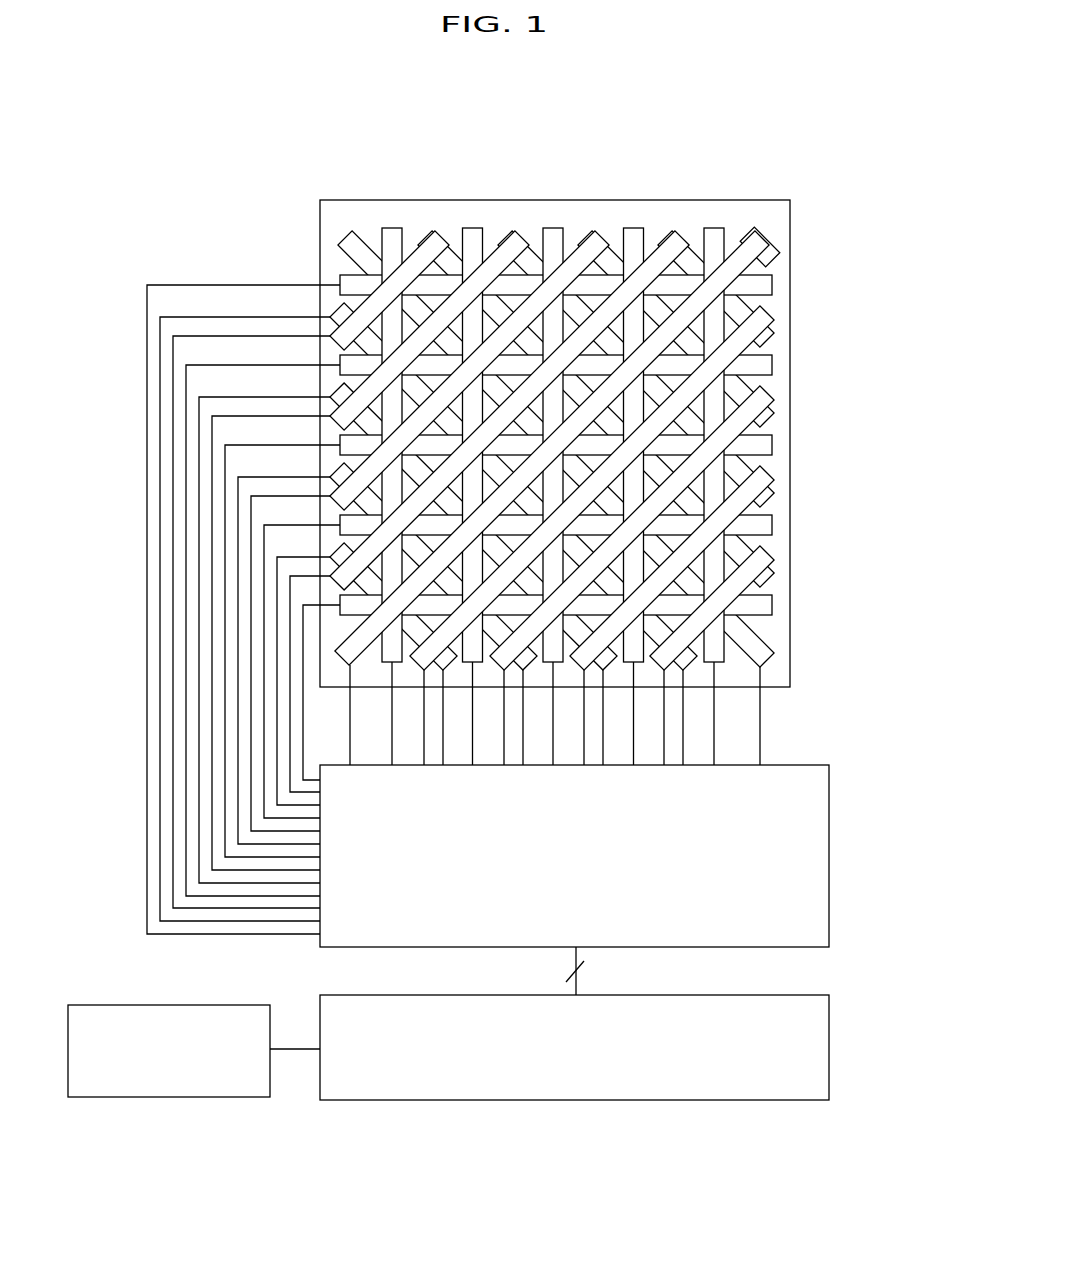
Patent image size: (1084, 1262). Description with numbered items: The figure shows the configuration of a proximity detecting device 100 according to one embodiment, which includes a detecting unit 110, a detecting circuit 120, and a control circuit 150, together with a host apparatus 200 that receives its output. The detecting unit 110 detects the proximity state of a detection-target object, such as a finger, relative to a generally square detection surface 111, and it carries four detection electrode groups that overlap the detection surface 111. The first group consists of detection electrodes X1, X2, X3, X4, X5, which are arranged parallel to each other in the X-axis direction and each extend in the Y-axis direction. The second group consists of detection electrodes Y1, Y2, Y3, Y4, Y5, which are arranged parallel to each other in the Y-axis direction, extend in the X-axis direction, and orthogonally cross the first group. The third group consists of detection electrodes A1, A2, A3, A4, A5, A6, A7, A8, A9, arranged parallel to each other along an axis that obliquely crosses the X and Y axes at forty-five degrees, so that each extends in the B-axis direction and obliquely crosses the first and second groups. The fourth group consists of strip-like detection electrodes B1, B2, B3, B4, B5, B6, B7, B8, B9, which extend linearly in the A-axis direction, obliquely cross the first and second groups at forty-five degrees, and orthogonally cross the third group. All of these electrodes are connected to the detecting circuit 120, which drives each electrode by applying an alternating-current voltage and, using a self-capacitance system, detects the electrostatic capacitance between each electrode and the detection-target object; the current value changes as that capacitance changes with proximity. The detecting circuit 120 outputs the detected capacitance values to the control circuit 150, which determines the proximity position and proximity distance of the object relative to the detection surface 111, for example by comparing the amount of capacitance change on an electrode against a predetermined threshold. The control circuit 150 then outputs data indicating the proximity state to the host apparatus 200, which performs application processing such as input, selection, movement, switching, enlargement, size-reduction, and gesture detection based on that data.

The proximity detecting device 100 is at (899, 89).
The detecting unit 110 is at (792, 195).
The detection surface 111 is at (318, 224).
The detecting circuit 120 is at (830, 855).
The control circuit 150 is at (830, 1048).
The host apparatus 200 is at (185, 1097).
The detection electrode X1 is at (394, 228).
The detection electrode X2 is at (474, 228).
The detection electrode X3 is at (555, 228).
The detection electrode X4 is at (635, 228).
The detection electrode X5 is at (715, 228).
The detection electrode Y1 is at (773, 285).
The detection electrode Y2 is at (773, 365).
The detection electrode Y3 is at (773, 445).
The detection electrode Y4 is at (773, 525).
The detection electrode Y5 is at (773, 605).
The detection electrode A1 is at (442, 228).
The detection electrode A2 is at (522, 228).
The detection electrode A3 is at (602, 228).
The detection electrode A4 is at (682, 228).
The detection electrode A5 is at (762, 228).
The detection electrode A6 is at (768, 306).
The detection electrode A7 is at (768, 386).
The detection electrode A8 is at (768, 466).
The detection electrode A9 is at (768, 546).
The detection electrode B1 is at (367, 583).
The detection electrode B2 is at (367, 503).
The detection electrode B3 is at (367, 423).
The detection electrode B4 is at (367, 343).
The detection electrode B5 is at (357, 253).
The detection electrode B6 is at (766, 507).
The detection electrode B7 is at (766, 427).
The detection electrode B8 is at (766, 347).
The detection electrode B9 is at (765, 270).